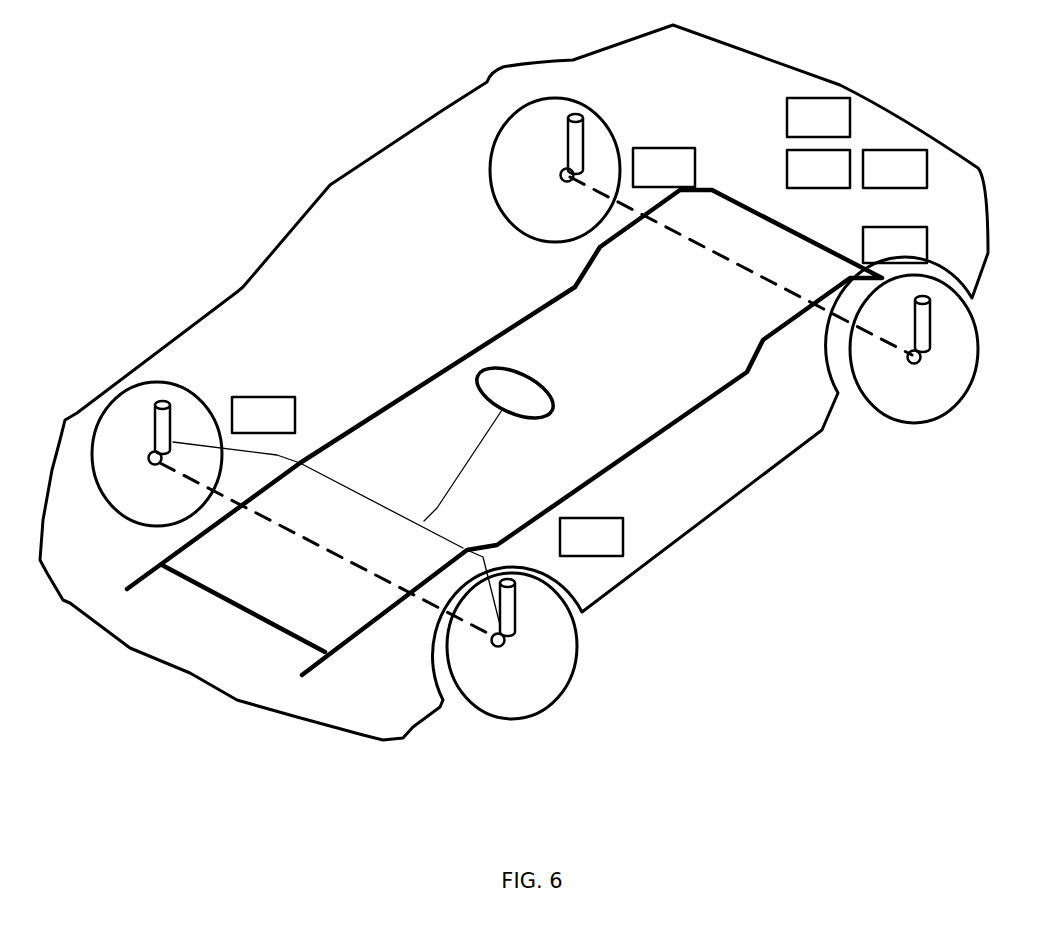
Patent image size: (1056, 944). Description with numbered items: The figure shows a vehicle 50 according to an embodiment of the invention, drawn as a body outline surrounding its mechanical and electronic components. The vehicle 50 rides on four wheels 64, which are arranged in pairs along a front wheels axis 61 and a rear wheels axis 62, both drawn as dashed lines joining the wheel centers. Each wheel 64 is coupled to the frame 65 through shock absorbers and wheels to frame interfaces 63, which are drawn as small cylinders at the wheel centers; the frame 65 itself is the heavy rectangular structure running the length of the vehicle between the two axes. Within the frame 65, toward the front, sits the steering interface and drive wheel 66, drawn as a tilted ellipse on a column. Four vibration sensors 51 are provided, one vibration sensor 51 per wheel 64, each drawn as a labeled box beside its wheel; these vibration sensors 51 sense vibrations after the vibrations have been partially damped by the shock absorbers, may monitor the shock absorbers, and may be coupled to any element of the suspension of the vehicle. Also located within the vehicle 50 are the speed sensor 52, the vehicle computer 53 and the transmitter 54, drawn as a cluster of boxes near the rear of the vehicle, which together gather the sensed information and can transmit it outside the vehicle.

The vehicle 50 is at (215, 781).
The vibration sensor 51 is at (276, 426).
The speed sensor 52 is at (882, 180).
The vehicle computer 53 is at (805, 180).
The transmitter 54 is at (805, 129).
The front wheels axis 61 is at (283, 532).
The rear wheels axis 62 is at (707, 250).
The shock absorbers and wheels to frame interfaces 63 is at (170, 423).
The wheels 64 is at (115, 496).
The frame 65 is at (750, 380).
The steering interface and drive wheel 66 is at (553, 406).